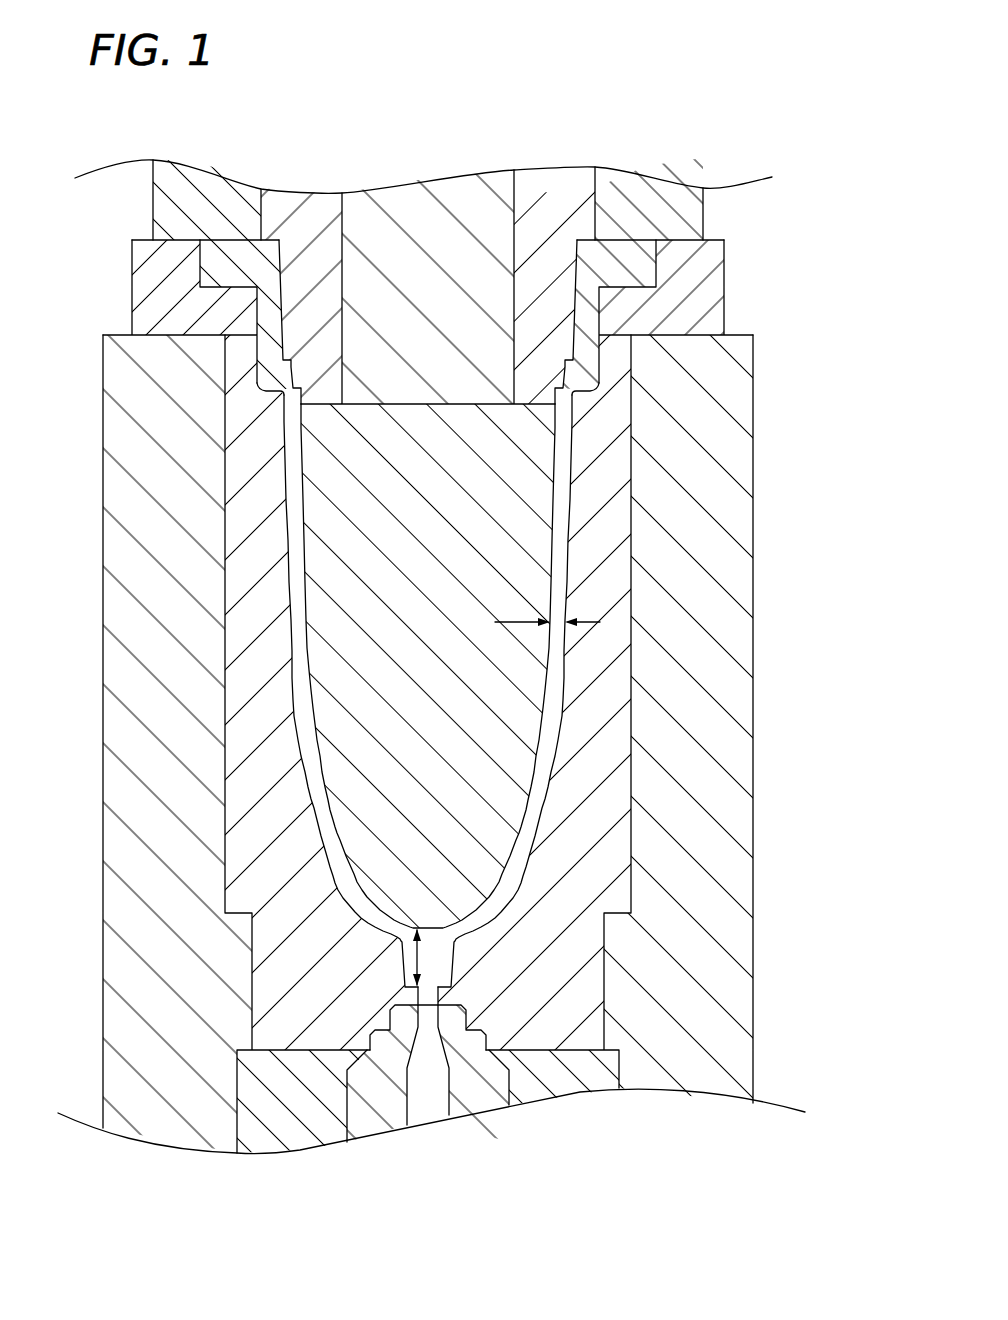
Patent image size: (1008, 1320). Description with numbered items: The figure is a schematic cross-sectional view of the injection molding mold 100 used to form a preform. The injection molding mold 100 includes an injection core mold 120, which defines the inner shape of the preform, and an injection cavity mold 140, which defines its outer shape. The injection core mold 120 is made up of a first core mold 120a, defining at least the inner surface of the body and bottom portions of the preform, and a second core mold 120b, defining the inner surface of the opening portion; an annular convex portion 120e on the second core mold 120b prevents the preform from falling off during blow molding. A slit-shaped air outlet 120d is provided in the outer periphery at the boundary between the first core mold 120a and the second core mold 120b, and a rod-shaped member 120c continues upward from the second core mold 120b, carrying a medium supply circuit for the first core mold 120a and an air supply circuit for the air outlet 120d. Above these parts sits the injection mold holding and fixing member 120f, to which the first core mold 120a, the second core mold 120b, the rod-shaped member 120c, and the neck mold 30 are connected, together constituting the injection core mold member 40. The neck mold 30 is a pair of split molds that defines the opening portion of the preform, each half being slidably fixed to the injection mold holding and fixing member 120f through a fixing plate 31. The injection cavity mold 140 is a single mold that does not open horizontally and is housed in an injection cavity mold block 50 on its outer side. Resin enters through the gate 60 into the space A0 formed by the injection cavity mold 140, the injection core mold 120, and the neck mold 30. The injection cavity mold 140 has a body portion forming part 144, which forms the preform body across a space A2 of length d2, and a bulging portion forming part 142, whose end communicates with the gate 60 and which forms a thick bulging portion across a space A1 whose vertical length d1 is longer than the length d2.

The injection molding mold 100 is at (850, 505).
The injection core mold 120 is at (440, 692).
The first core mold 120a is at (325, 590).
The second core mold 120b is at (315, 217).
The rod-shaped member 120c is at (436, 287).
The air outlet 120d is at (303, 423).
The annular convex portion 120e is at (567, 403).
The injection mold holding and fixing member 120f is at (183, 190).
The injection cavity mold 140 is at (549, 697).
The bulging portion forming part 142 is at (453, 970).
The body portion forming part 144 is at (565, 660).
The neck mold 30 is at (633, 264).
The fixing plate 31 is at (157, 270).
The injection core mold member 40 is at (445, 315).
The injection cavity mold block 50 is at (705, 367).
The gate 60 is at (422, 1018).
The space A0 is at (814, 858).
The space A1 is at (440, 960).
The space A2 is at (527, 847).
The vertical length d1 is at (432, 947).
The length d2 is at (547, 610).